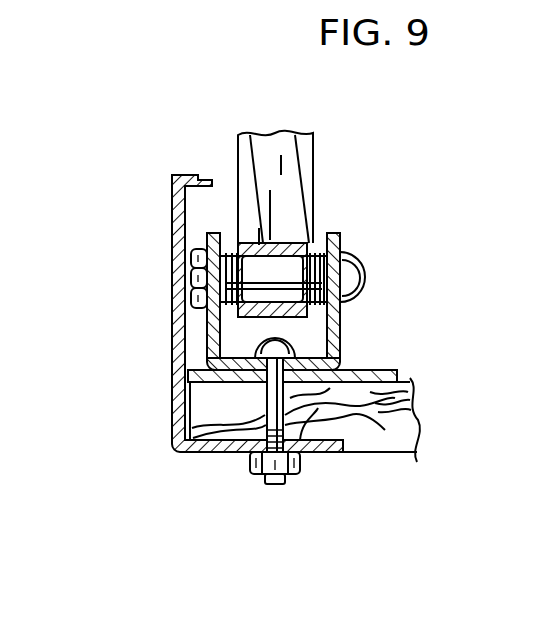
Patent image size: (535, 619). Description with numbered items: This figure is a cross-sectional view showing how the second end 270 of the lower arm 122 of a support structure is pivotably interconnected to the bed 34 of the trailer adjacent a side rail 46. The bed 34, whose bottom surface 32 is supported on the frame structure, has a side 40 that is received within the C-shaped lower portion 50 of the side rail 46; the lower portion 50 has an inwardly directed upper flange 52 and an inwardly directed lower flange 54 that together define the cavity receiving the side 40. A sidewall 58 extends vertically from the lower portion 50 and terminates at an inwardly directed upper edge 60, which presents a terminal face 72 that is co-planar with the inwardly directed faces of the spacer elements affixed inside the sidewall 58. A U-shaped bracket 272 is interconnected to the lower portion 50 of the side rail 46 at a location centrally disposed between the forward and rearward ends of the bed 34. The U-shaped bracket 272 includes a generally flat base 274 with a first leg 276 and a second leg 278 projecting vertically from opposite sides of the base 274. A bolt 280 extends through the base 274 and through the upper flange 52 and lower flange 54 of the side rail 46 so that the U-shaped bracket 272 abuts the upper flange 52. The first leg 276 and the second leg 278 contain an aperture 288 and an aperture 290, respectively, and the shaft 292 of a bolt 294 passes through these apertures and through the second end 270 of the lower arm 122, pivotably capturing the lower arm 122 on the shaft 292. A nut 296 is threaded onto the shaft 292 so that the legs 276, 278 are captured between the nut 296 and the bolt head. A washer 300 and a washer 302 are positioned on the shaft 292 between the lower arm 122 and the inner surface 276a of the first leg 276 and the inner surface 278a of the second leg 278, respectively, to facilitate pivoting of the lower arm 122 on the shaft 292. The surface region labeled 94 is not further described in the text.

The bottom surface 32 is at (410, 443).
The bed 34 is at (340, 403).
The side 40 is at (172, 420).
The first side rail 46 is at (158, 340).
The lower portion 50 is at (205, 455).
The upper flange 52 is at (337, 367).
The lower flange 54 is at (342, 453).
The sidewall 58 is at (185, 268).
The upper edge 60 is at (200, 174).
The terminal face 72 is at (224, 170).
The frame member surface 94 is at (393, 381).
The lower arm 122 is at (314, 163).
The second end 270 is at (310, 232).
The U-shaped bracket 272 is at (259, 257).
The base 274 is at (305, 368).
The first leg 276 is at (207, 238).
The inner surface 276a is at (212, 233).
The second leg 278 is at (340, 237).
The inner surface 278a is at (320, 237).
The bolt 280 is at (318, 442).
The aperture 288 is at (191, 289).
The aperture 290 is at (279, 181).
The shaft 292 is at (247, 243).
The bolt 294 is at (262, 302).
The nut 296 is at (222, 252).
The washer 300 is at (210, 337).
The washer 302 is at (325, 274).